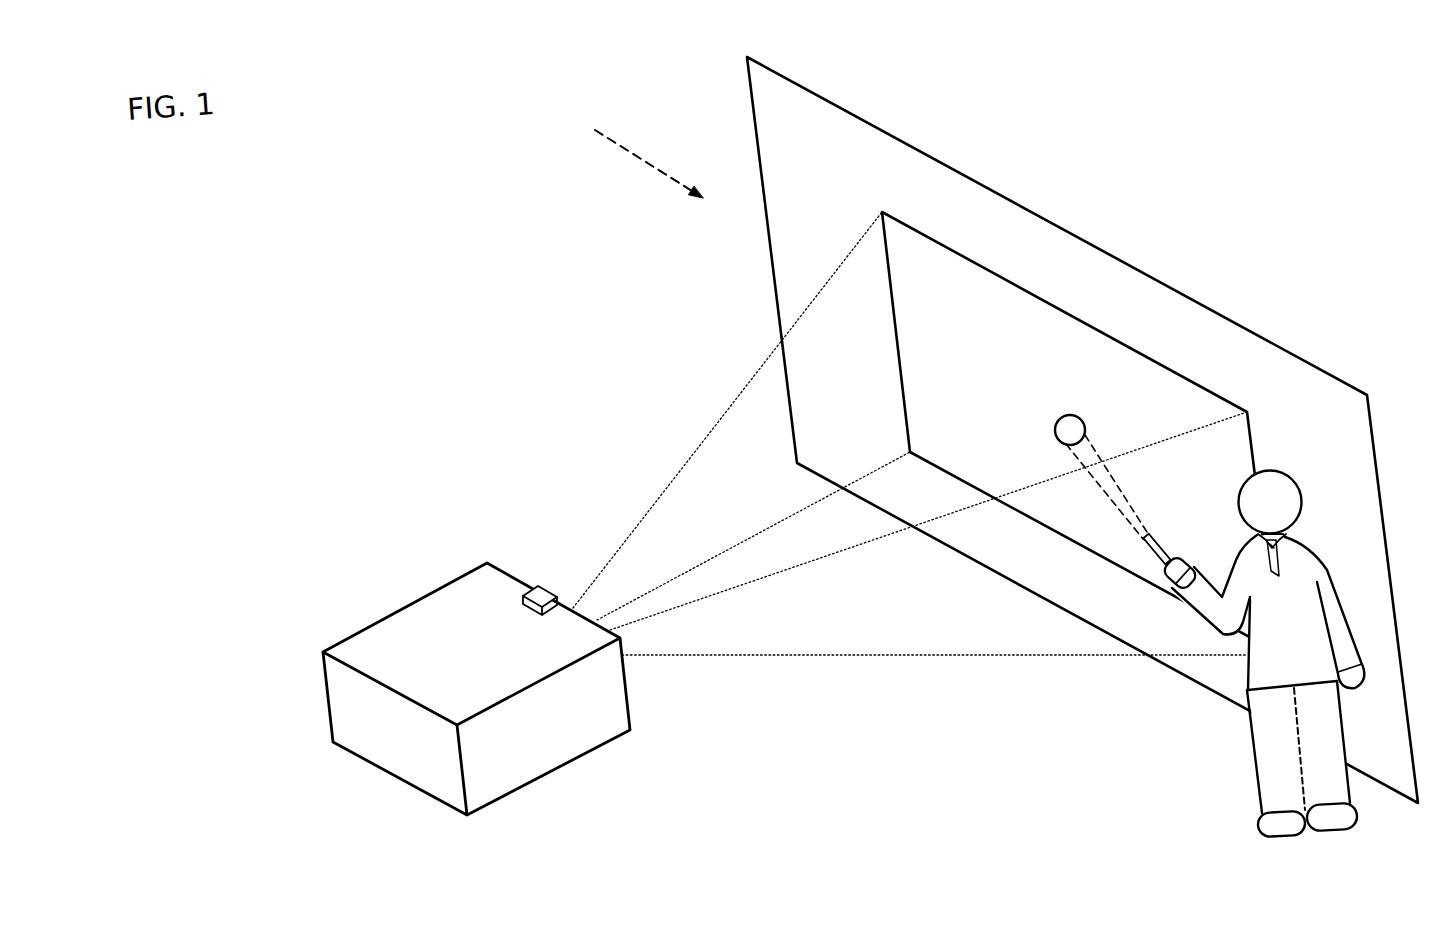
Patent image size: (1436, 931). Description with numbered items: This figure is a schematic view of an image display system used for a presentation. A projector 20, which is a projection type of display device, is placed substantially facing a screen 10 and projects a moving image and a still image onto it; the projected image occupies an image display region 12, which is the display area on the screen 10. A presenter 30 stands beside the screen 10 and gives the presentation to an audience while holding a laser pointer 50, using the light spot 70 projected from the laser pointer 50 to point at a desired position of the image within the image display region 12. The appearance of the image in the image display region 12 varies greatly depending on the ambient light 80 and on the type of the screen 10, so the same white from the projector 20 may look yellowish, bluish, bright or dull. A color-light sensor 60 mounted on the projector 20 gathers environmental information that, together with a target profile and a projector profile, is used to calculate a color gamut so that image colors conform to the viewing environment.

The screen 10 is at (1103, 250).
The image display region 12 is at (1119, 306).
The projector 20 is at (606, 721).
The presenter 30 is at (1275, 469).
The laser pointer 50 is at (1170, 556).
The color-light sensor 60 is at (540, 590).
The light spot 70 is at (1083, 424).
The ambient light 80 is at (616, 142).